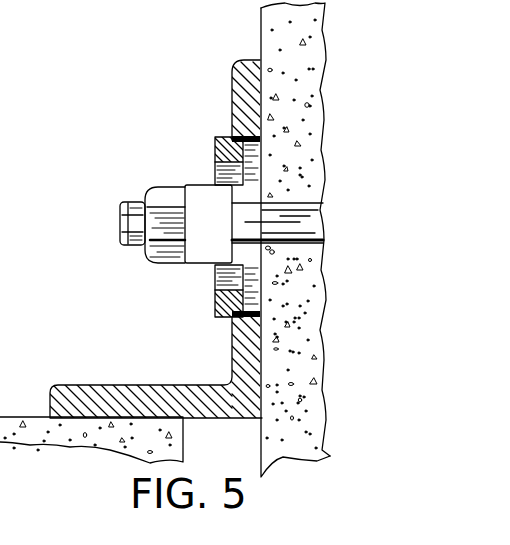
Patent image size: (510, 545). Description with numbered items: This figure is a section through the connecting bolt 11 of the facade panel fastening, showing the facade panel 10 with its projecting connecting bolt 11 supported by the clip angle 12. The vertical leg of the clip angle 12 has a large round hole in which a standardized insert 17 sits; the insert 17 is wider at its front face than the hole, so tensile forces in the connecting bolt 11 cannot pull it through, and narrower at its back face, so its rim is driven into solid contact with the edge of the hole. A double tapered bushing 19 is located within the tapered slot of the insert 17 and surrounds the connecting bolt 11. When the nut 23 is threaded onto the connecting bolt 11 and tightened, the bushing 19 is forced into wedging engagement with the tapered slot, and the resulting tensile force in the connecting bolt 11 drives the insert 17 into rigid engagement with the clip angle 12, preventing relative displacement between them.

The facade panel 10 is at (328, 240).
The connecting bolt 11 is at (122, 204).
The clip angle 12 is at (237, 78).
The insert 17 is at (215, 147).
The double tapered bushing 19 is at (205, 194).
The nut 23 is at (163, 193).